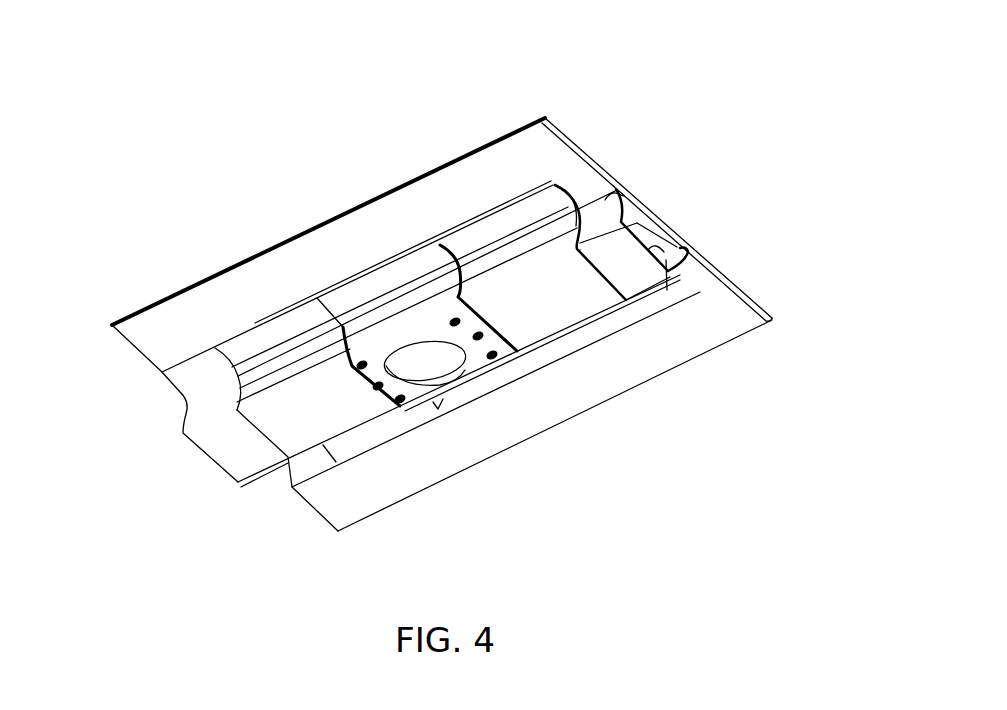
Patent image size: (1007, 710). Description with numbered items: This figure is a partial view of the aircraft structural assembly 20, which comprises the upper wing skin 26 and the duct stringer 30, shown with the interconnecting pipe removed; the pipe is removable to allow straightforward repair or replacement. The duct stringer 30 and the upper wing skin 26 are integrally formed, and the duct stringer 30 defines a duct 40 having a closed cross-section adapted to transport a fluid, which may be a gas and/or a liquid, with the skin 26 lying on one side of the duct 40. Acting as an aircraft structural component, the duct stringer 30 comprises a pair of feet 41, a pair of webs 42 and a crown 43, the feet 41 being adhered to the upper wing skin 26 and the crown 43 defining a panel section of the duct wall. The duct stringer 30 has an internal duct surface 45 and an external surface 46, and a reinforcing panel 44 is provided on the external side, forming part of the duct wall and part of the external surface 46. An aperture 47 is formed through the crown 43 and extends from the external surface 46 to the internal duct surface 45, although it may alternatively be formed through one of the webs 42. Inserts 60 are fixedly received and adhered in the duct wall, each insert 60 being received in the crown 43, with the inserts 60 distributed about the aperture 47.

The aircraft structural assembly 20 is at (709, 112).
The upper wing skin 26 is at (247, 277).
The duct stringer 30 is at (195, 417).
The duct 40 is at (657, 235).
The feet 41 is at (573, 165).
The webs 42 is at (612, 190).
The crown 43 is at (640, 233).
The reinforcing panel 44 is at (403, 327).
The internal duct surface 45 is at (667, 283).
The external surface 46 is at (628, 270).
The aperture 47 is at (418, 368).
The inserts 60 is at (455, 318).